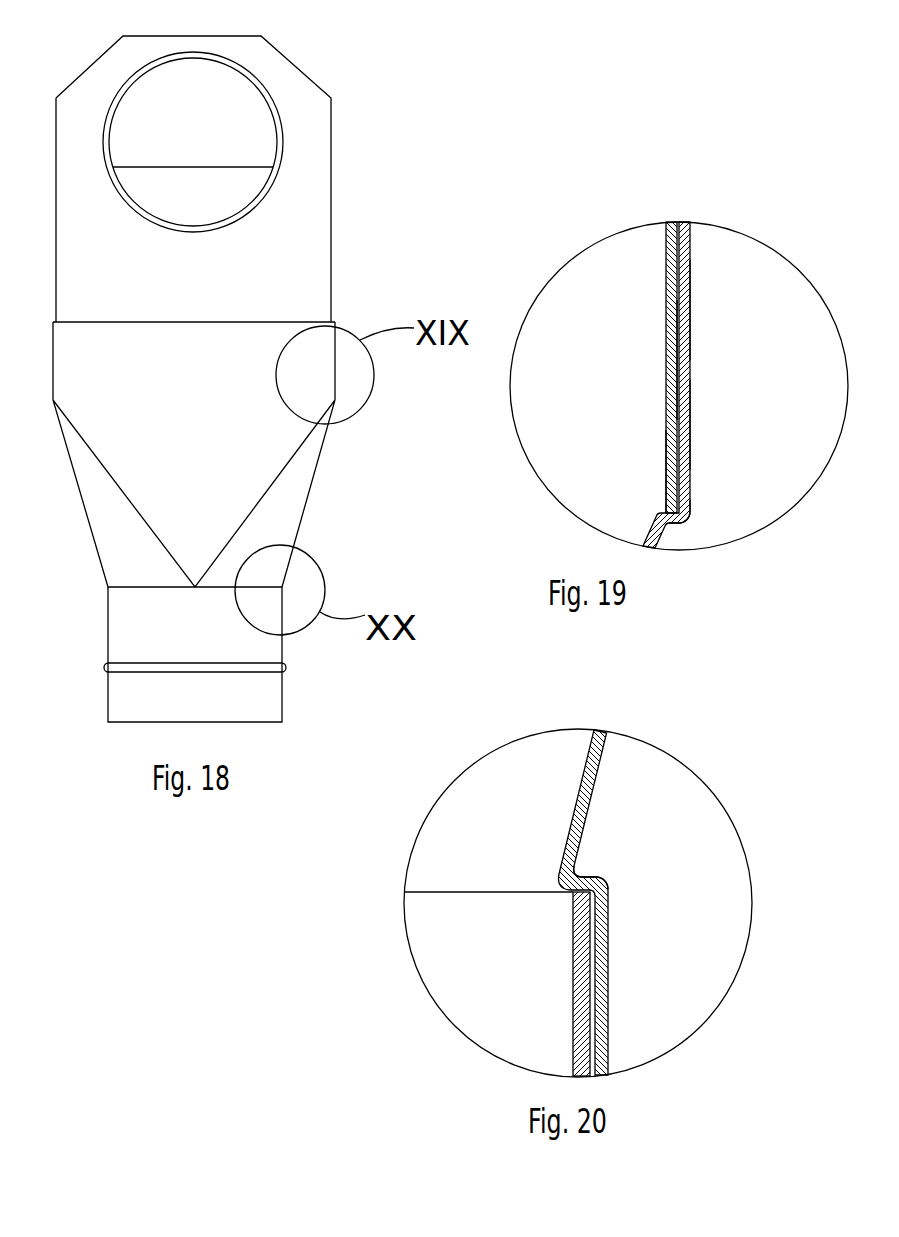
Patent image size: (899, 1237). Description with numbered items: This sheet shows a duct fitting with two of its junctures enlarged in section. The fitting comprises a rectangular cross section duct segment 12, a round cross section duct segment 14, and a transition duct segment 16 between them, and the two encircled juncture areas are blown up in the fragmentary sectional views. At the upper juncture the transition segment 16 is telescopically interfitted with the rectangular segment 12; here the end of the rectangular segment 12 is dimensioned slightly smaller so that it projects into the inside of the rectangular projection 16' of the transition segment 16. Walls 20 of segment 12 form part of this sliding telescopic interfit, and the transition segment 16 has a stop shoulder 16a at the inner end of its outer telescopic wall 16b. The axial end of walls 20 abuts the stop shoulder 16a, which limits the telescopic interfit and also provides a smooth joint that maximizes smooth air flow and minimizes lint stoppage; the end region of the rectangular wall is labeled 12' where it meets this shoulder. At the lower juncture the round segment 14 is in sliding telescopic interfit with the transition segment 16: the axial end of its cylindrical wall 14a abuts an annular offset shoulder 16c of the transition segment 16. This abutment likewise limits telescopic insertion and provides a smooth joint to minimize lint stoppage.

In FIG. 18, the rectangular cross section duct segment 12 is at (242, 179).
In FIG. 19, the rectangular cross section duct segment 12 is at (632, 367).
In FIG. 19, the lower edge of container body wall 12' is at (633, 471).
In FIG. 18, the round cross section duct segment 14 is at (106, 702).
In FIG. 20, the cylindrical wall 14a is at (573, 958).
In FIG. 18, the transition duct segment 16 is at (236, 454).
In FIG. 19, the transition duct segment 16 is at (700, 422).
In FIG. 20, the transition duct segment 16 is at (619, 902).
In FIG. 19, the rectangular projection 16' is at (731, 425).
In FIG. 19, the stop shoulder 16a is at (681, 523).
In FIG. 19, the outer telescopic wall 16b is at (692, 308).
In FIG. 20, the annular offset shoulder 16c is at (585, 877).
In FIG. 19, the opposite parallel walls 20 is at (667, 358).